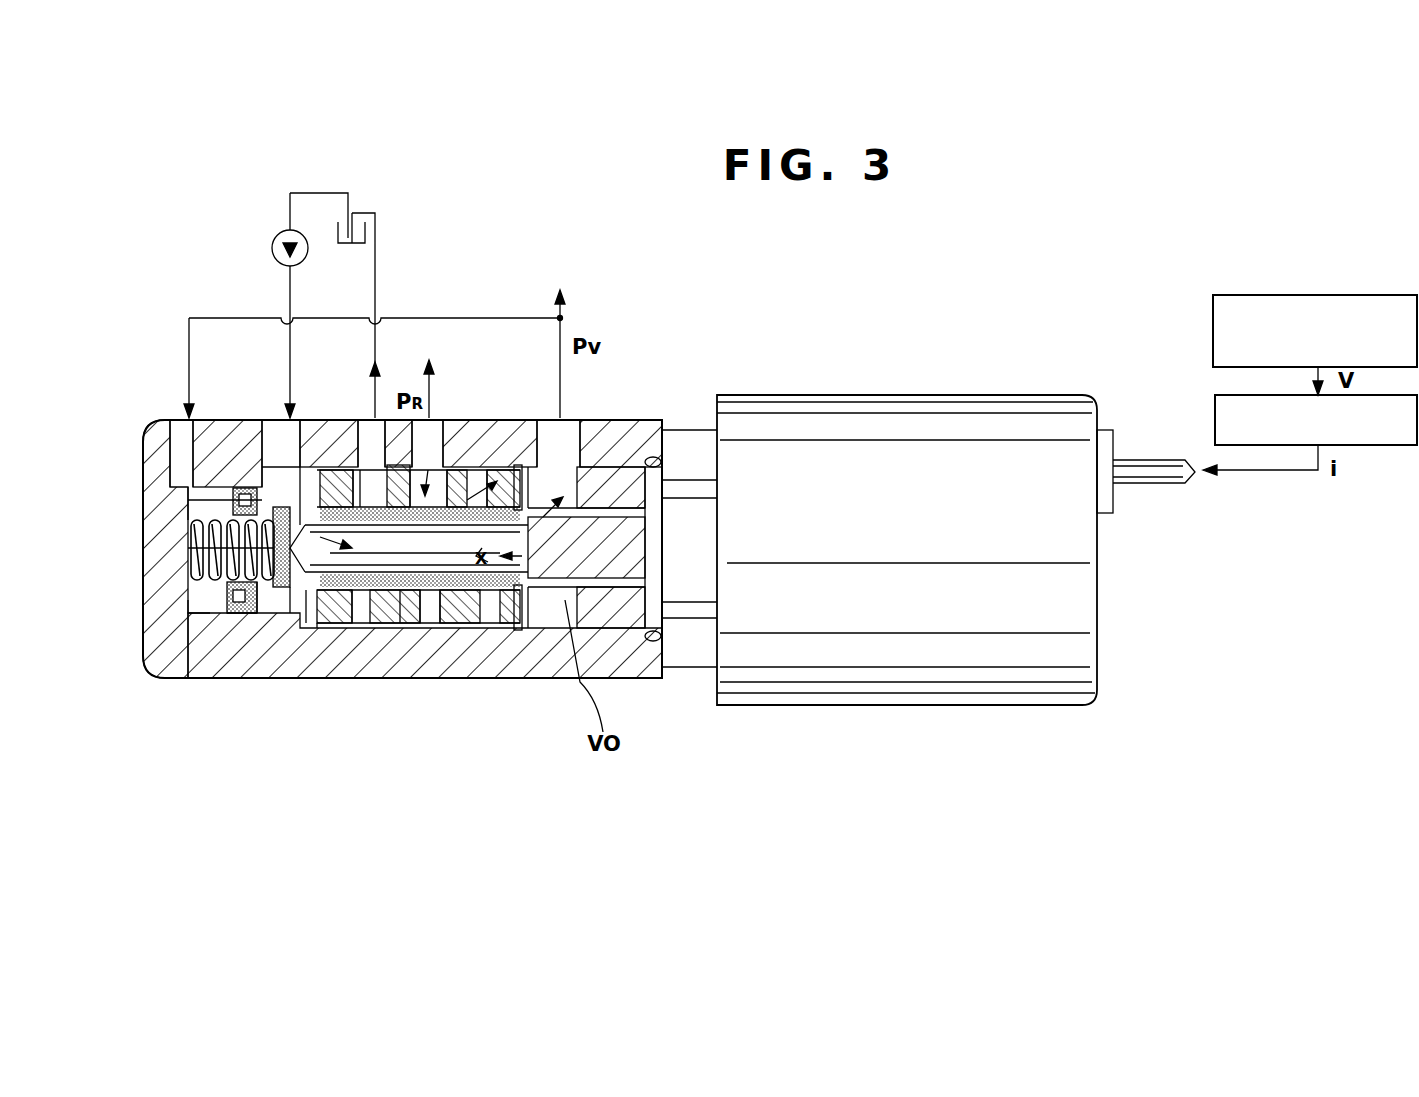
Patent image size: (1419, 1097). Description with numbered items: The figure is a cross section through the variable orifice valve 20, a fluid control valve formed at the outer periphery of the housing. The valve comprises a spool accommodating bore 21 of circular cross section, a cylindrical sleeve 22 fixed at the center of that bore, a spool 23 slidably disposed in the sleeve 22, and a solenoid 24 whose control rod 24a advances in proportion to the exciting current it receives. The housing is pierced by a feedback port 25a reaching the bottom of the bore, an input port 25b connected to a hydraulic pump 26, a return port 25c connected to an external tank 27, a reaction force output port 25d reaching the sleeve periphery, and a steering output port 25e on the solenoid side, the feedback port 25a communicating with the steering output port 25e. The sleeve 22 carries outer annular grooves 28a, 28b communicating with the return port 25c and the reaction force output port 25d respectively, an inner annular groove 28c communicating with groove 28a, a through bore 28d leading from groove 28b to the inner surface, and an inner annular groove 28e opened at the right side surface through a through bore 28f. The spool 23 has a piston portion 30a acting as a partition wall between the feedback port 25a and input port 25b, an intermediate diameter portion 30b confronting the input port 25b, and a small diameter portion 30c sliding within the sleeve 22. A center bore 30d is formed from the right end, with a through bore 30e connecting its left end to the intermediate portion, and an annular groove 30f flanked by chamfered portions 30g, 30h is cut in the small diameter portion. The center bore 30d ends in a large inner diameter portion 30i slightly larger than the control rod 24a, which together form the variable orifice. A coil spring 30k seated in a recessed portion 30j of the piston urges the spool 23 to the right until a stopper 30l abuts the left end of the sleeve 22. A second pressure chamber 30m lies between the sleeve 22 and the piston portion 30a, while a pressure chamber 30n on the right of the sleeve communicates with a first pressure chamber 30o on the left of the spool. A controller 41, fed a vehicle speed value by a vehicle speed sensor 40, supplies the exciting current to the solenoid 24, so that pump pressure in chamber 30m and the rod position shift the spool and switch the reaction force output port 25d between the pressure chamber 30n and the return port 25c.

The variable orifice valve 20 is at (130, 454).
The spool accommodating bore 21 is at (212, 470).
The cylindrical sleeve 22 is at (382, 628).
The spool 23 is at (488, 625).
The solenoid 24 is at (916, 672).
The control rod 24a is at (647, 682).
The feedback port 25a is at (178, 420).
The input port 25b is at (274, 420).
The return port 25c is at (370, 420).
The reaction force output port 25d is at (440, 418).
The steering output port 25e is at (572, 418).
The hydraulic pump 26 is at (278, 240).
The external tank 27 is at (352, 246).
The annular groove 28a is at (308, 625).
The annular groove 28b is at (422, 625).
The annular groove 28c is at (310, 470).
The through bore 28d is at (405, 475).
The annular groove 28e is at (455, 475).
The through bore 28f is at (497, 475).
The piston portion 30a is at (233, 625).
The intermediate diameter portion 30b is at (255, 600).
The small diameter portion 30c is at (335, 626).
The center bore 30d is at (370, 470).
The through bore 30e is at (285, 600).
The annular groove 30f is at (404, 626).
The chamfered portion 30g is at (357, 626).
The chamfered portion 30h is at (432, 626).
The large inner diameter portion 30i is at (540, 600).
The recessed portion 30j is at (192, 562).
The coil spring 30k is at (188, 613).
The stopper 30l is at (302, 470).
The second pressure chamber 30m is at (250, 470).
The pressure chamber 30n is at (545, 470).
The first pressure chamber 30o is at (190, 508).
The vehicle speed sensor 40 is at (1213, 322).
The controller 41 is at (1215, 406).